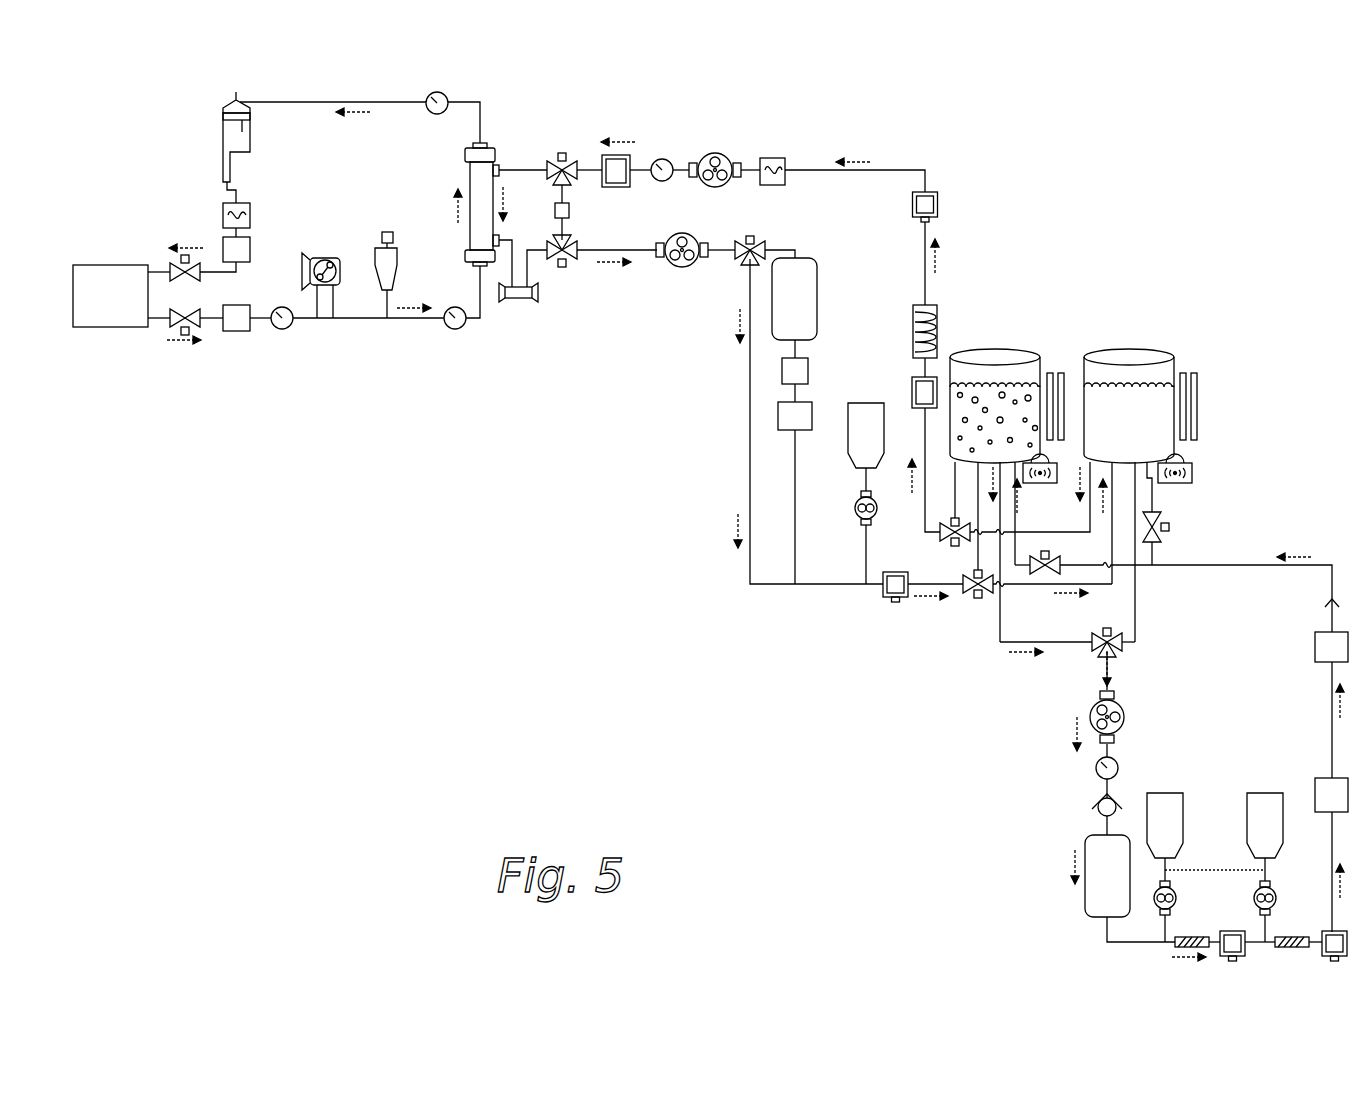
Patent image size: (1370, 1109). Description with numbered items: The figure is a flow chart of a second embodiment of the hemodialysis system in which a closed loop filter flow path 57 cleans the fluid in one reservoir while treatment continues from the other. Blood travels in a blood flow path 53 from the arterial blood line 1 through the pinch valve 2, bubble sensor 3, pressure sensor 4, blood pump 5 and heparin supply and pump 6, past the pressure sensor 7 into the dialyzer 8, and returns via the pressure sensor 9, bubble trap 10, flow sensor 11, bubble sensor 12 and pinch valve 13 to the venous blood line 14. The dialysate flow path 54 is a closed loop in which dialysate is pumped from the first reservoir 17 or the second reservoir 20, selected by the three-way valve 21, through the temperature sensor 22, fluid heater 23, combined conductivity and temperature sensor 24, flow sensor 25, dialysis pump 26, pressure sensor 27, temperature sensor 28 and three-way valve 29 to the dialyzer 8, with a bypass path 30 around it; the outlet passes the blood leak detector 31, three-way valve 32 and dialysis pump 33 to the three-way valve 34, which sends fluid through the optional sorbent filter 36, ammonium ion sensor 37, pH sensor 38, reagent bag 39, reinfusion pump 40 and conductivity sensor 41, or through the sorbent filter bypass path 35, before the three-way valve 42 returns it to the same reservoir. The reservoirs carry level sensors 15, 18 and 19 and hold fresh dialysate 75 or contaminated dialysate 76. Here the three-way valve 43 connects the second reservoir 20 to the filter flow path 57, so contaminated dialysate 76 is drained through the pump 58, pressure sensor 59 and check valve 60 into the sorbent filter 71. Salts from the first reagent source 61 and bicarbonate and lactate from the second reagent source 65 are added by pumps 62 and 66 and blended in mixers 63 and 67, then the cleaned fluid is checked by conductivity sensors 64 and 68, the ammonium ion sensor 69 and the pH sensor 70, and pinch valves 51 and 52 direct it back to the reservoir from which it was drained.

The arterial blood line 1 is at (148, 330).
The pinch valve, arterial line 2 is at (200, 322).
The bubble sensor, arterial line 3 is at (240, 333).
The pressure sensor, blood pump inlet 4 is at (284, 330).
The blood pump 5 is at (330, 258).
The heparin supply and pump 6 is at (388, 232).
The pressure sensor, dialyzer input 7 is at (452, 330).
The dialyzer 8 is at (492, 152).
The pressure sensor, dialyzer output 9 is at (432, 114).
The bubble trap 10 is at (245, 140).
The flow sensor, blood circuit 11 is at (222, 210).
The bubble sensor, venous line 12 is at (252, 250).
The pinch valve, venous line 13 is at (178, 265).
The venous blood line 14 is at (148, 268).
The primary level sensor, first reservoir 15 is at (1192, 375).
The first reservoir 17 is at (1155, 355).
The primary level sensor, second reservoir 18 is at (1060, 375).
The secondary level sensor, second reservoir 19 is at (1033, 485).
The second reservoir 20 is at (1025, 355).
The 3-way valve, reservoir outlet 21 is at (945, 538).
The temperature sensor, heater inlet 22 is at (935, 380).
The fluid heater 23 is at (937, 312).
The combined conductivity and temperature sensor 24 is at (938, 205).
The flow sensor, dialysis circuit 25 is at (778, 158).
The dialysis pump, dialyzer inlet 26 is at (722, 155).
The pressure sensor, dialysis circuit 27 is at (665, 160).
The temperature sensor, dialyzer inlet 28 is at (630, 160).
The 3-way valve, dialyzer inlet 29 is at (563, 155).
The bypass path, dialyzer 30 is at (570, 210).
The blood leak detector 31 is at (515, 300).
The 3-way valve, dialyzer outlet 32 is at (565, 268).
The dialysis pump, dialyzer outlet 33 is at (688, 268).
The 3-way valve, sorbent filter bypass 34 is at (752, 236).
The sorbent filter bypass path 35 is at (748, 418).
The sorbent filter 36 is at (817, 300).
The ammonium ion sensor 37 is at (808, 370).
The pH sensor 38 is at (797, 432).
The reagent bag 39 is at (866, 403).
The pump, sorbent filter reinfusion 40 is at (855, 510).
The conductivity sensor, sorbent filter outlet 41 is at (883, 590).
The 3-way valve, reservoir recirculation 42 is at (978, 605).
The 3-way valve, reservoir drain 43 is at (1103, 630).
The pinch valve, first reservoir inlet 51 is at (1170, 527).
The pinch valve, second reservoir inlet 52 is at (1052, 556).
The blood flow path 53 is at (475, 320).
The dialysate flow path 54 is at (920, 165).
The filter flow path 57 is at (1332, 592).
The pump, filter flow path 58 is at (1125, 710).
The pressure sensor, filter flow path 59 is at (1096, 770).
The check valve 60 is at (1098, 812).
The first reagent source 61 is at (1165, 793).
The pump, reagents 62 is at (1155, 910).
The mixer 63 is at (1192, 937).
The conductivity sensor 64 is at (1235, 931).
The second reagent source 65 is at (1265, 793).
The pump, reagents 66 is at (1275, 892).
The mixer 67 is at (1298, 937).
The conductivity sensor 68 is at (1347, 940).
The ammonium ion sensor 69 is at (1340, 778).
The pH sensor 70 is at (1315, 646).
The sorbent filter 71 is at (1085, 893).
The fresh dialysate 75 is at (1132, 428).
The contaminated dialysate 76 is at (1002, 393).